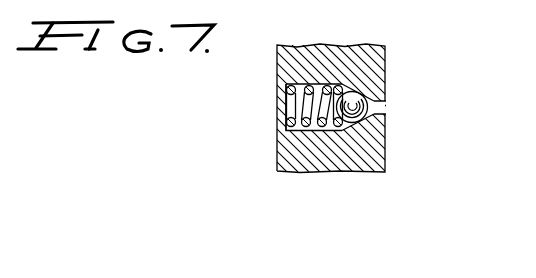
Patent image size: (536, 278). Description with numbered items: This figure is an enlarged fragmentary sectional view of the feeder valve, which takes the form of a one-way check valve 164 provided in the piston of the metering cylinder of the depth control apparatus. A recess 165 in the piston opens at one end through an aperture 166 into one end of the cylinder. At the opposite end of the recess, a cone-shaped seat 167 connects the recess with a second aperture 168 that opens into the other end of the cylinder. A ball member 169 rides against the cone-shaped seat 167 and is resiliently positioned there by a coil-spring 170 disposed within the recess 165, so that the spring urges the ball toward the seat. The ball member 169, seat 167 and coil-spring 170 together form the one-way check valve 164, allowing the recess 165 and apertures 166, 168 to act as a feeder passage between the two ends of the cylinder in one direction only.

The one-way check valve 164 is at (259, 124).
The recess 165 is at (320, 131).
The aperture 166 is at (287, 113).
The cone-shaped seat 167 is at (378, 118).
The aperture 168 is at (376, 108).
The ball member 169 is at (352, 95).
The coil-spring 170 is at (331, 131).